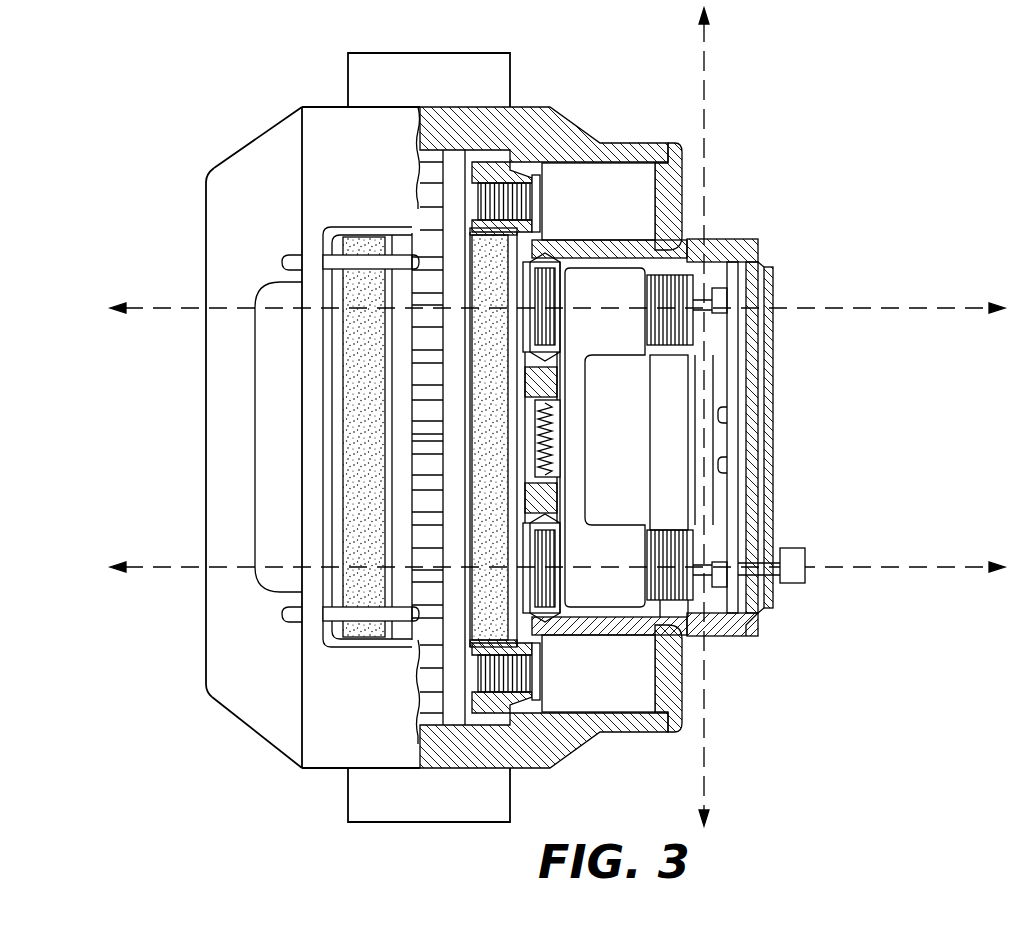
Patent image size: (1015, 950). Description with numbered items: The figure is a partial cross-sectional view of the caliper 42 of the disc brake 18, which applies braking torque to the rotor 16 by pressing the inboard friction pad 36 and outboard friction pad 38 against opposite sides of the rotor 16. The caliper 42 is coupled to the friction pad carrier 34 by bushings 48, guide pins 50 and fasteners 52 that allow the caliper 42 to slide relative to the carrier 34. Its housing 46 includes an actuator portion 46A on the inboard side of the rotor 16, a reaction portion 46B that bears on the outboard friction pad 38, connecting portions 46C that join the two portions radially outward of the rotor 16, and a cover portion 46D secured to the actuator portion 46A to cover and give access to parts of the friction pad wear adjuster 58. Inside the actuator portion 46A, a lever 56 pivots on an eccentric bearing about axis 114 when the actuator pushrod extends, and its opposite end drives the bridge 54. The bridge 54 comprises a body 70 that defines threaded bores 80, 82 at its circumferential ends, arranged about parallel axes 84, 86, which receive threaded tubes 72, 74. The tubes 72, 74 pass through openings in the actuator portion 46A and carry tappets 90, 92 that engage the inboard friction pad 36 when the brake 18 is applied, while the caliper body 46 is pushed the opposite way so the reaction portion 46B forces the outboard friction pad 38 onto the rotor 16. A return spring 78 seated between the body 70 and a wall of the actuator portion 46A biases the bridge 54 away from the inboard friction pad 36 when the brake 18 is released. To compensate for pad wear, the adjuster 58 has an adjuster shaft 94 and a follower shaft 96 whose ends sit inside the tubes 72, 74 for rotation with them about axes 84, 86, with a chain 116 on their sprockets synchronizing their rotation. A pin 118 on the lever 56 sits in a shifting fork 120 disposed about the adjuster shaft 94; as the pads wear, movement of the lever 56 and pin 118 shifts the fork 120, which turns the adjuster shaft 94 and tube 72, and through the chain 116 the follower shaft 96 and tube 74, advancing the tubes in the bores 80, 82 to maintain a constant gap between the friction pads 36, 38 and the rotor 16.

The rotor 16 is at (456, 212).
The disc brake 18 is at (318, 453).
The friction pad carrier 34 is at (488, 706).
The inboard friction pad 36 is at (440, 645).
The outboard friction pad 38 is at (358, 425).
The caliper 42 is at (540, 88).
The housing 46 is at (332, 453).
The actuator portion 46A is at (723, 250).
The reaction portion 46B is at (272, 150).
The connecting portion 46C is at (307, 775).
The cover portion 46D is at (762, 249).
The bushing 48 is at (617, 178).
The guide pin 50 is at (535, 203).
The fastener 52 is at (663, 185).
The bridge 54 is at (672, 400).
The lever 56 is at (720, 434).
The friction pad wear adjuster 58 is at (826, 592).
The body 70 is at (640, 477).
The threaded tube 72 is at (675, 578).
The threaded tube 74 is at (668, 302).
The return spring 78 is at (545, 437).
The bore 80 is at (647, 558).
The bore 82 is at (648, 327).
The axis 84 is at (923, 568).
The axis 86 is at (912, 309).
The tappet 90 is at (538, 540).
The tappet 92 is at (538, 314).
The adjuster shaft 94 is at (705, 568).
The follower shaft 96 is at (705, 310).
The axis 114 is at (705, 757).
The chain 116 is at (753, 453).
The pin 118 is at (727, 535).
The shifting fork 120 is at (723, 590).